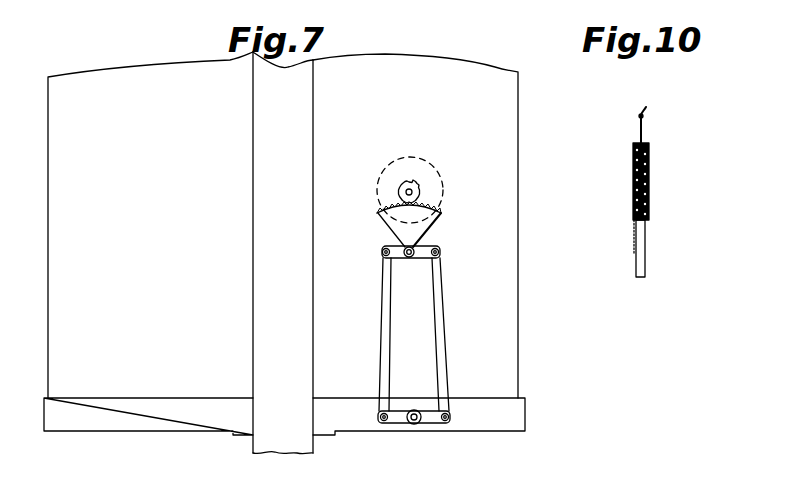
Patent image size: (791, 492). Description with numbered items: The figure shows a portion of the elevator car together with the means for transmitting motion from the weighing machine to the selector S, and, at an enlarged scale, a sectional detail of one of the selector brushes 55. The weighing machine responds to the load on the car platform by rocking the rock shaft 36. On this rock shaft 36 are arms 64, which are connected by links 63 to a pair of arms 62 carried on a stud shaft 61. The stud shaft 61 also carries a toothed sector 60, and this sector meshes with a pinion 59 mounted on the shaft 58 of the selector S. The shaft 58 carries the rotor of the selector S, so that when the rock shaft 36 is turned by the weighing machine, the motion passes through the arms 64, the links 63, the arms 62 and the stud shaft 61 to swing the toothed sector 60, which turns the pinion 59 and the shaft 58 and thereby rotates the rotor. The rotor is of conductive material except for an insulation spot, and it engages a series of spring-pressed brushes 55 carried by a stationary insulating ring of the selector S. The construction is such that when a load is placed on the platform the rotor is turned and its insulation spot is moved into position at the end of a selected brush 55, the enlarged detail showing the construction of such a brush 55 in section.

In FIG. 7, the selector S is at (428, 166).
In FIG. 7, the shaft 58 is at (418, 186).
In FIG. 7, the pinion 59 is at (402, 192).
In FIG. 7, the toothed sector 60 is at (441, 216).
In FIG. 7, the stud shaft 61 is at (409, 262).
In FIG. 7, the arms 62 is at (383, 258).
In FIG. 7, the links 63 is at (439, 340).
In FIG. 7, the arms 64 is at (428, 410).
In FIG. 7, the rock shaft 36 is at (417, 424).
In FIG. 10, the spring-pressed brush 55 is at (645, 257).